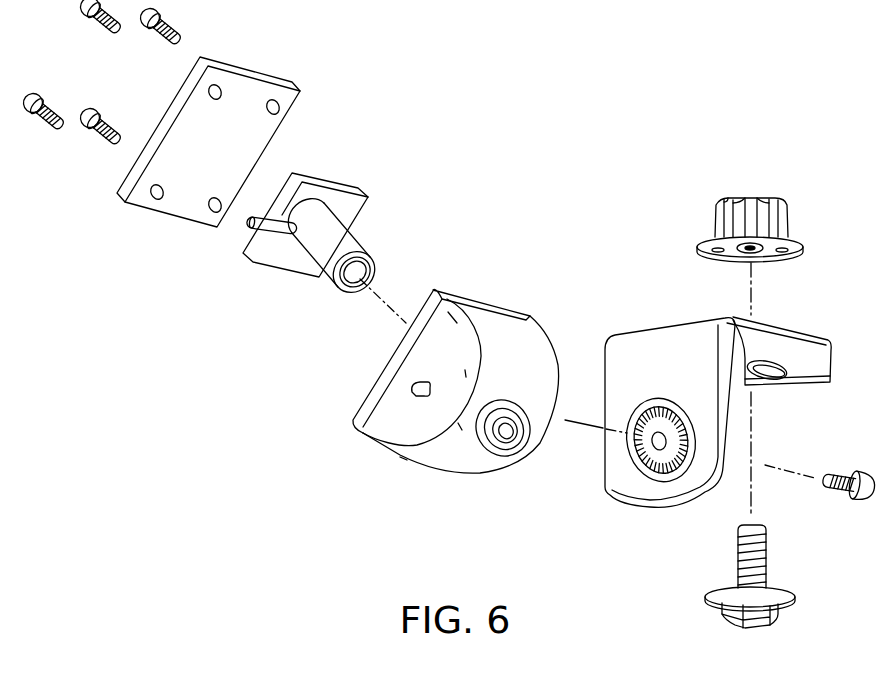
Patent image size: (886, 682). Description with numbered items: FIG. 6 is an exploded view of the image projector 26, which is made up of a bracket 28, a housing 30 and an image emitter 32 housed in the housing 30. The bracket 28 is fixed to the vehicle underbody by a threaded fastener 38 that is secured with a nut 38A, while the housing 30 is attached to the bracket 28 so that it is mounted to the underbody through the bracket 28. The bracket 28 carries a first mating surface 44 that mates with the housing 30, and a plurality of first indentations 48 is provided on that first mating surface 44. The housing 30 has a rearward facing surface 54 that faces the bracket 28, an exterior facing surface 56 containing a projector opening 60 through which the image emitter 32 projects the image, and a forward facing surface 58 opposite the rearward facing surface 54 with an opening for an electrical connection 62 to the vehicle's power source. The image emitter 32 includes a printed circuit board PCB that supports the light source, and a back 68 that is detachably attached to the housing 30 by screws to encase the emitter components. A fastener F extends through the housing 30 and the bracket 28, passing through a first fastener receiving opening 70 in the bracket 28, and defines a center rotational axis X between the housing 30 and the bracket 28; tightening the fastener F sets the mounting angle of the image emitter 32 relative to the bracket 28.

The image projector 26 is at (567, 160).
The bracket 28 is at (793, 307).
The housing 30 is at (503, 290).
The image emitter 32 is at (376, 233).
The fastener 38 is at (783, 588).
The nut 38A is at (790, 213).
The first mating surface 44 is at (677, 407).
The first indentations 48 is at (640, 477).
The rearward facing surface 54 is at (553, 338).
The exterior facing surface 56 is at (458, 457).
The forward facing surface 58 is at (397, 423).
The projector opening 60 is at (502, 443).
The electrical connection 62 is at (263, 228).
The back 68 is at (173, 220).
The first fastener receiving opening 70 is at (656, 440).
The printed circuit board PCB is at (328, 175).
The center rotational axis X is at (565, 420).
The fastener F is at (843, 478).